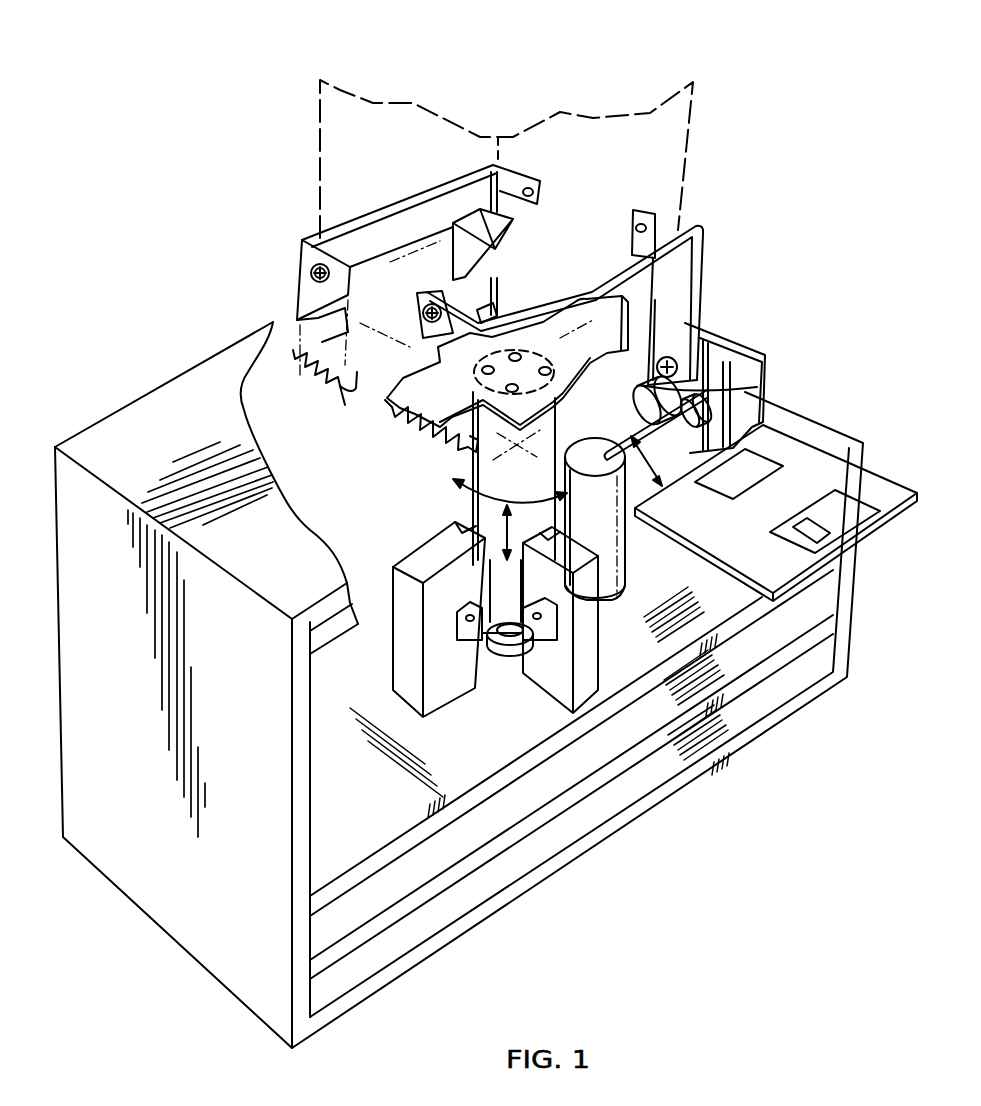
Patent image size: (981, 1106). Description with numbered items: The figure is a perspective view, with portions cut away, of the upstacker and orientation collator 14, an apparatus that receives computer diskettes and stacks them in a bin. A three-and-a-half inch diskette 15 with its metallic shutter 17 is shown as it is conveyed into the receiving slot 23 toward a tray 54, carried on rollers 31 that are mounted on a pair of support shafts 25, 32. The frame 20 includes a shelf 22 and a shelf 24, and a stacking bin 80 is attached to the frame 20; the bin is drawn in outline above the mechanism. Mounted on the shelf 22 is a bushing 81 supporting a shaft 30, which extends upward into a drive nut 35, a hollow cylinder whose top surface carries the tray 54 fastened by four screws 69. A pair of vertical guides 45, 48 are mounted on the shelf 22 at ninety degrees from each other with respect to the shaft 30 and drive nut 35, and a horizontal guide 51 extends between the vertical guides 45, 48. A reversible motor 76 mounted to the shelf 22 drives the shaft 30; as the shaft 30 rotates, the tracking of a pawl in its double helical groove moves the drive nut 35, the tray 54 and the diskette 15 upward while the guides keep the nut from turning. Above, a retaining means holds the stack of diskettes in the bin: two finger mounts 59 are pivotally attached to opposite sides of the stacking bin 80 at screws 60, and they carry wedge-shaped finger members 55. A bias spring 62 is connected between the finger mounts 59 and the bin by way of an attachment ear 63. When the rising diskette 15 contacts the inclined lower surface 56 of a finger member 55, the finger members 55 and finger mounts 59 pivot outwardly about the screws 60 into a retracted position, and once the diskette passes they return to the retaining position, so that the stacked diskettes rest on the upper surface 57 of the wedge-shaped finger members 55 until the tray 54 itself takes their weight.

The upstacker and orientation collator 14 is at (582, 84).
The diskette 15 is at (790, 443).
The metallic shutter 17 is at (860, 537).
The frame 20 is at (237, 343).
The shelf 22 is at (590, 720).
The receiving slot 23 is at (664, 485).
The shelf 24 is at (630, 772).
The support shaft 25 is at (760, 380).
The shaft 30 is at (497, 653).
The rollers 31 is at (710, 428).
The support shaft 32 is at (630, 458).
The drive nut 35 is at (475, 517).
The vertical guide 45 is at (420, 557).
The vertical guide 48 is at (613, 553).
The horizontal guide 51 is at (457, 627).
The tray 54 is at (575, 330).
The wedge-shaped finger member 55 is at (460, 240).
The inclined lower surface 56 is at (487, 253).
The upper surface 57 is at (477, 217).
The finger mount 59 is at (362, 233).
The screw 60 is at (533, 188).
The spring 62 is at (303, 367).
The attachment ear 63 is at (343, 373).
The screws 69 is at (545, 367).
The reversible motor 76 is at (605, 587).
The stacking bin 80 is at (320, 138).
The bushing 81 is at (517, 650).